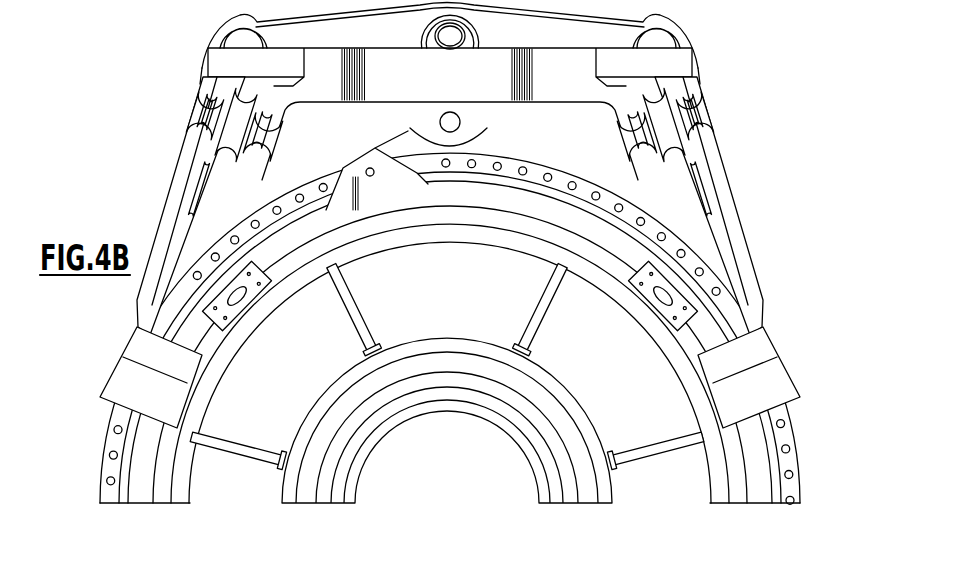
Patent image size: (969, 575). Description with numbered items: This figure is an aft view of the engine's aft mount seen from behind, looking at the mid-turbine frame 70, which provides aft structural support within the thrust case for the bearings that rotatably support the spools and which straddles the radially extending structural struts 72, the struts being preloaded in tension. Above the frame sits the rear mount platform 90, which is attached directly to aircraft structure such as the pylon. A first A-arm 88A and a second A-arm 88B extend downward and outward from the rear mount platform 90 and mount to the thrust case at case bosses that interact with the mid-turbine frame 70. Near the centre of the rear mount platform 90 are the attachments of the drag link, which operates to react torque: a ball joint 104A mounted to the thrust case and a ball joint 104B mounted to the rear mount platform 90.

The mid-turbine frame 70 is at (586, 494).
The structural struts 72 is at (661, 458).
The first A-arm 88A is at (742, 207).
The second A-arm 88B is at (158, 207).
The rear mount platform 90 is at (668, 62).
The ball joint 104A is at (360, 156).
The ball joint 104B is at (483, 134).